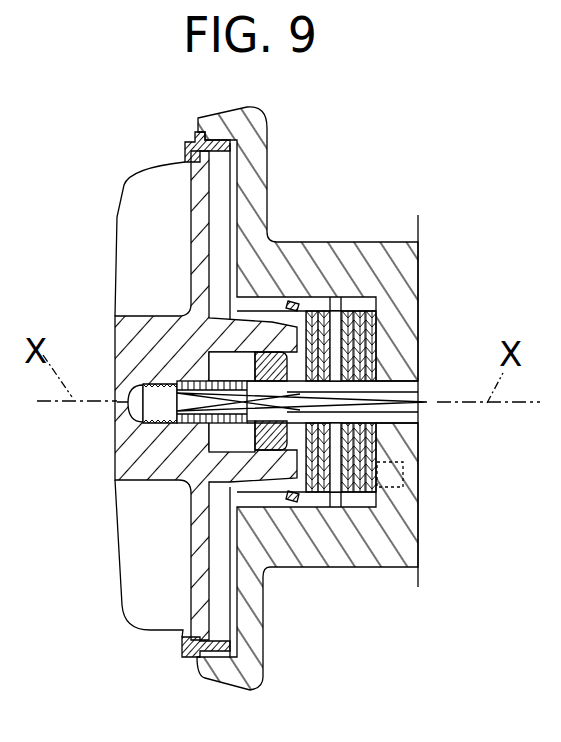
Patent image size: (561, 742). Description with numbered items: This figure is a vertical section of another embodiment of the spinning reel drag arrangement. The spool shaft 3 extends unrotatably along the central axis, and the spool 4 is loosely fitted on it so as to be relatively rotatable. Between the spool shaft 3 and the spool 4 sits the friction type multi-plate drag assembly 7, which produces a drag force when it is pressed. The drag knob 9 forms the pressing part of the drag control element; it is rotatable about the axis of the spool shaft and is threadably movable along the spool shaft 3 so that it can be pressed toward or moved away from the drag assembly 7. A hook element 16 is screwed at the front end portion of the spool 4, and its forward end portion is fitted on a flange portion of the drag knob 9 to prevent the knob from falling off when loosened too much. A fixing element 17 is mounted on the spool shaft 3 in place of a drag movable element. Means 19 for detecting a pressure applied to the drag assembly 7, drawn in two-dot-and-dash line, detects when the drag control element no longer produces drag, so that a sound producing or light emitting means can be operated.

The spool shaft 3 is at (413, 445).
The spool 4 is at (393, 568).
The friction type multi-plate drag assembly 7 is at (367, 299).
The drag knob 9 is at (115, 255).
The hook element 16 is at (183, 152).
The fixing element 17 is at (188, 484).
The means for detecting a pressure applied to the drag assembly 19 is at (403, 487).